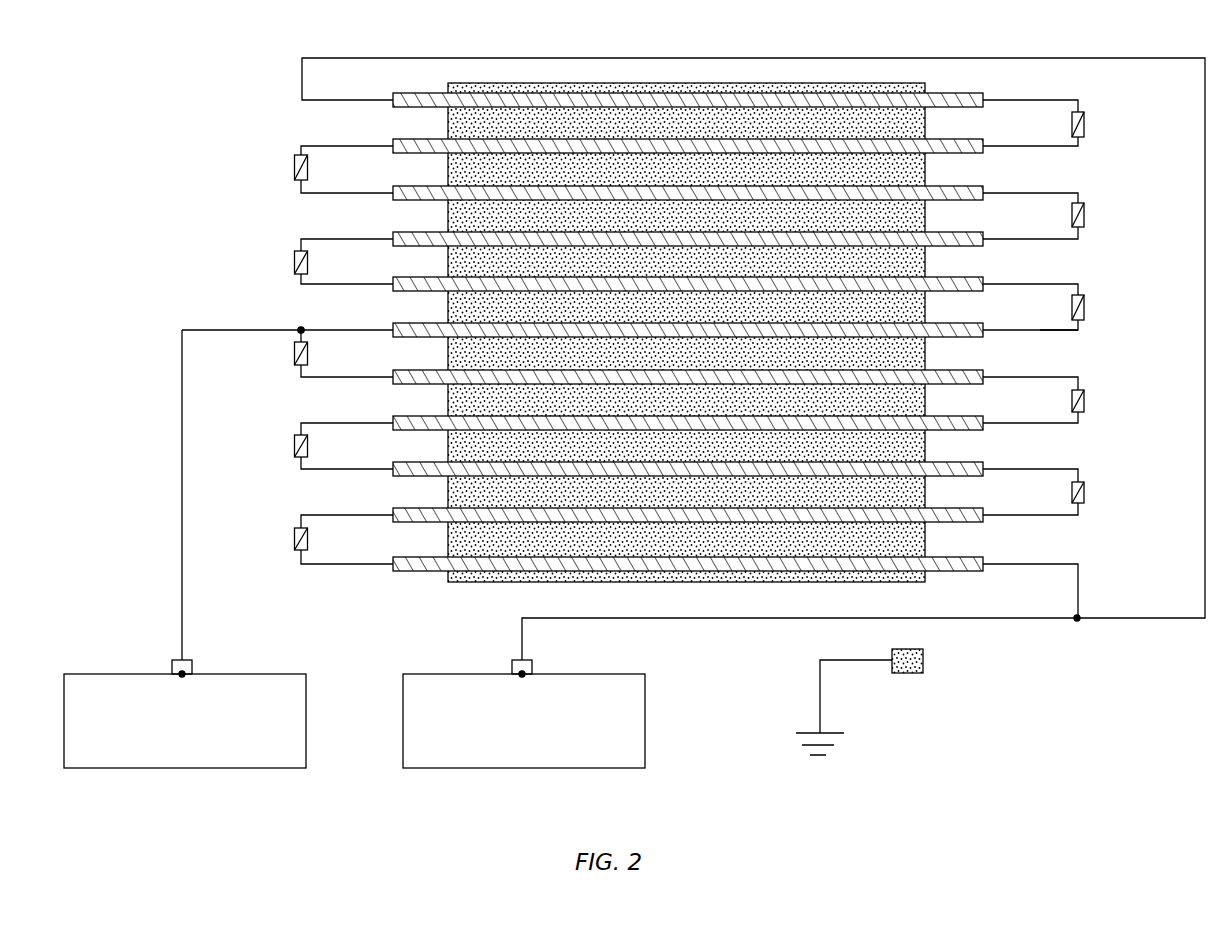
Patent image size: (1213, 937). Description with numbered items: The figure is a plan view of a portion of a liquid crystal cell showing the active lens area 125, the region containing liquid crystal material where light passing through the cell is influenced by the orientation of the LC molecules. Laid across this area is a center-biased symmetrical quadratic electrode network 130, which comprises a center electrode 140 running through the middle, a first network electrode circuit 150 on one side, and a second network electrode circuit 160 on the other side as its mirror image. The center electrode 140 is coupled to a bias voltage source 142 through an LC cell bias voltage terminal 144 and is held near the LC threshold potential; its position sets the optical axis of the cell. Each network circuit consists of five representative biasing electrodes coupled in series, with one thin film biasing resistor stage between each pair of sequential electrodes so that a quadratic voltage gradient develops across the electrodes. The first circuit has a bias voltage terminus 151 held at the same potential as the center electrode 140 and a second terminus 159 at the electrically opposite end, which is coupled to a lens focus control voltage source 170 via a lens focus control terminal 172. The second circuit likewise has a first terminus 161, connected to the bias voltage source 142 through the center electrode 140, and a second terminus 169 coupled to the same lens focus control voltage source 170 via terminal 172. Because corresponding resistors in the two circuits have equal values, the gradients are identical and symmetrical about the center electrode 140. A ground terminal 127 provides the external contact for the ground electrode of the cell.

The active lens area 125 is at (447, 80).
The ground terminal 127 is at (923, 668).
The center-biased symmetrical quadratic electrode network 130 is at (170, 91).
The center electrode 140 is at (412, 325).
The bias voltage source 142 is at (306, 727).
The LC cell bias voltage terminal 144 is at (172, 667).
The first network electrode circuit 150 is at (290, 340).
The bias voltage terminus 151 is at (300, 328).
The second terminus 159 is at (1075, 597).
The second network electrode circuit 160 is at (290, 82).
The second network electrode circuit first terminus 161 is at (1055, 331).
The second terminus 169 is at (322, 100).
The lens focus control voltage source 170 is at (645, 727).
The lens focus control terminal 172 is at (512, 667).